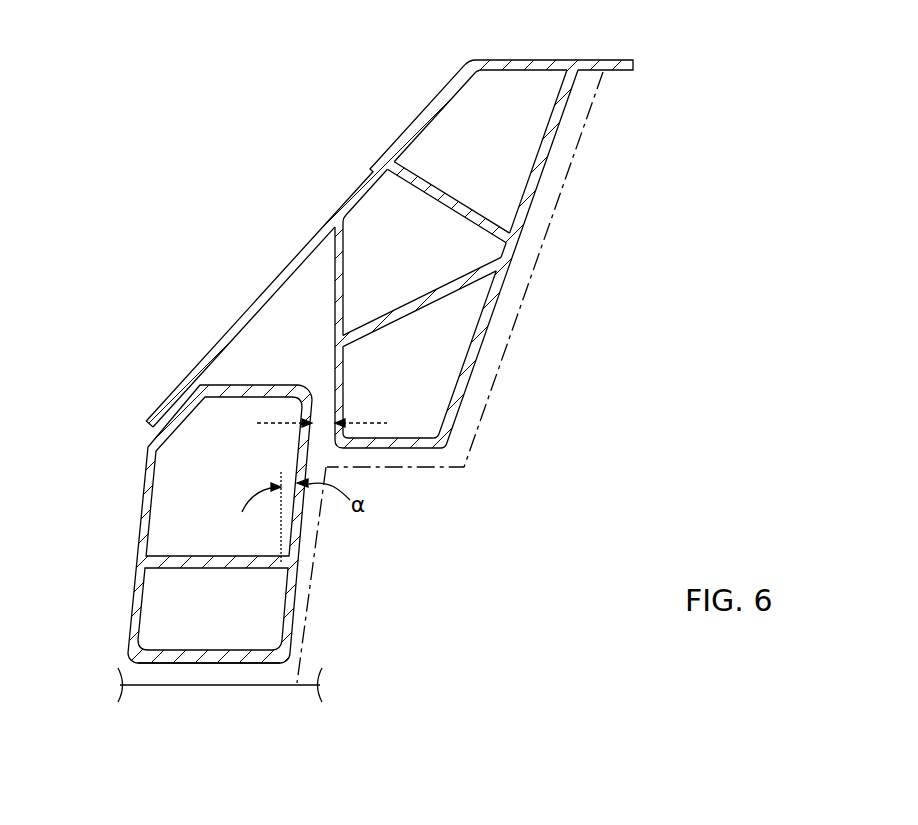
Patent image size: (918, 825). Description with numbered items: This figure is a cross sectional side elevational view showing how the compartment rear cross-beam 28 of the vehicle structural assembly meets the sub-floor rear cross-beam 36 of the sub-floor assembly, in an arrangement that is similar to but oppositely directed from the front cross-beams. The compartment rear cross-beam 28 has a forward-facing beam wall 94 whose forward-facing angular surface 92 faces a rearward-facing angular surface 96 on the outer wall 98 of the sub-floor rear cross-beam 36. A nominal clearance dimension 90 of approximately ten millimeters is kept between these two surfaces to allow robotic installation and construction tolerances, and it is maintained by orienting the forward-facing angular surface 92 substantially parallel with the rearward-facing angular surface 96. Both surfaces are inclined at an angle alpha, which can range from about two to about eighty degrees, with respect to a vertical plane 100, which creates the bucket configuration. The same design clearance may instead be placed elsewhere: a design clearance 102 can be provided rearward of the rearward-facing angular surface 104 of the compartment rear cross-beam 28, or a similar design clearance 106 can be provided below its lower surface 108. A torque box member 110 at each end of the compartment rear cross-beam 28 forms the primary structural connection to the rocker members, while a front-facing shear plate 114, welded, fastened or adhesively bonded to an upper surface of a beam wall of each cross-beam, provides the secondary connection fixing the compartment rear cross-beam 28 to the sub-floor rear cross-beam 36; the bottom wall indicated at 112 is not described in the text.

The compartment rear cross-beam 28 is at (517, 60).
The sub-floor rear cross-beam 36 is at (142, 507).
The nominal clearance dimension 90 is at (367, 423).
The forward-facing angular surface 92 is at (322, 328).
The forward-facing beam wall 94 is at (343, 280).
The rearward-facing angular surface 96 is at (312, 548).
The outer wall 98 is at (293, 600).
The vertical plane 100 is at (280, 533).
The design clearance 102 is at (563, 193).
The rearward-facing angular surface 104 is at (484, 365).
The design clearance 106 is at (407, 467).
The lower surface 108 is at (421, 460).
The torque box member 110 is at (232, 686).
The bottom wall of lower member 112 is at (186, 672).
The shear plate 114 is at (263, 302).